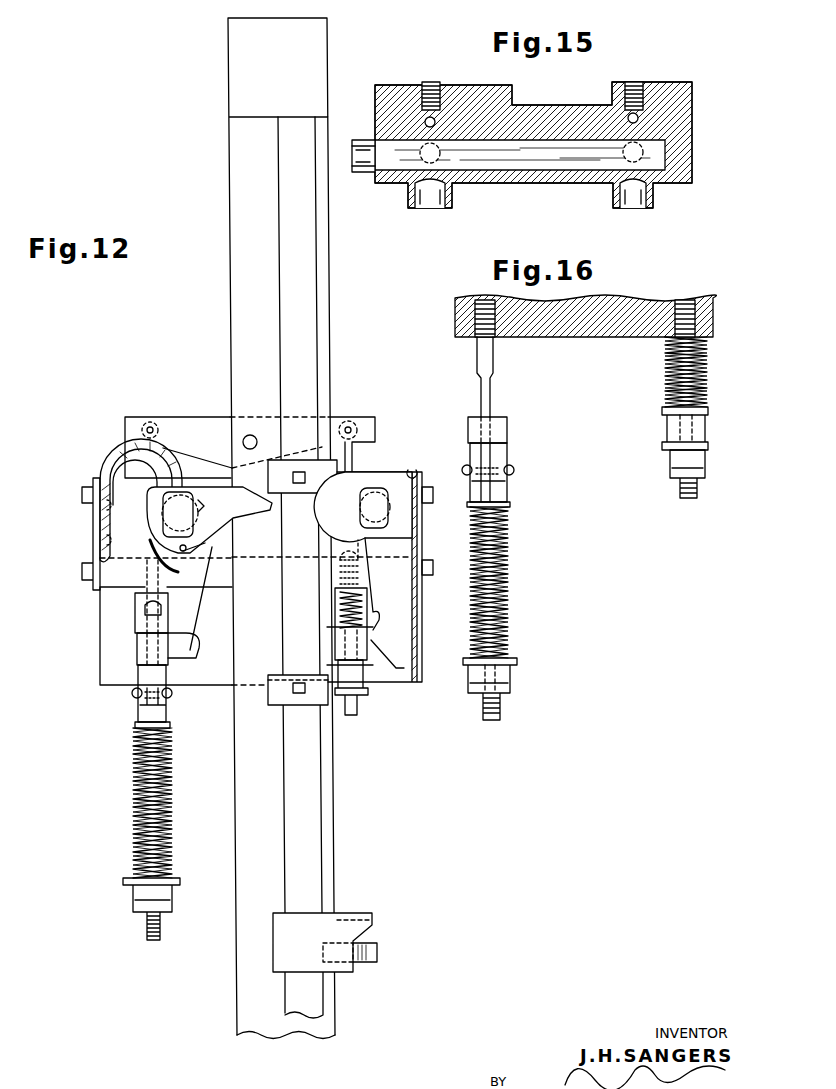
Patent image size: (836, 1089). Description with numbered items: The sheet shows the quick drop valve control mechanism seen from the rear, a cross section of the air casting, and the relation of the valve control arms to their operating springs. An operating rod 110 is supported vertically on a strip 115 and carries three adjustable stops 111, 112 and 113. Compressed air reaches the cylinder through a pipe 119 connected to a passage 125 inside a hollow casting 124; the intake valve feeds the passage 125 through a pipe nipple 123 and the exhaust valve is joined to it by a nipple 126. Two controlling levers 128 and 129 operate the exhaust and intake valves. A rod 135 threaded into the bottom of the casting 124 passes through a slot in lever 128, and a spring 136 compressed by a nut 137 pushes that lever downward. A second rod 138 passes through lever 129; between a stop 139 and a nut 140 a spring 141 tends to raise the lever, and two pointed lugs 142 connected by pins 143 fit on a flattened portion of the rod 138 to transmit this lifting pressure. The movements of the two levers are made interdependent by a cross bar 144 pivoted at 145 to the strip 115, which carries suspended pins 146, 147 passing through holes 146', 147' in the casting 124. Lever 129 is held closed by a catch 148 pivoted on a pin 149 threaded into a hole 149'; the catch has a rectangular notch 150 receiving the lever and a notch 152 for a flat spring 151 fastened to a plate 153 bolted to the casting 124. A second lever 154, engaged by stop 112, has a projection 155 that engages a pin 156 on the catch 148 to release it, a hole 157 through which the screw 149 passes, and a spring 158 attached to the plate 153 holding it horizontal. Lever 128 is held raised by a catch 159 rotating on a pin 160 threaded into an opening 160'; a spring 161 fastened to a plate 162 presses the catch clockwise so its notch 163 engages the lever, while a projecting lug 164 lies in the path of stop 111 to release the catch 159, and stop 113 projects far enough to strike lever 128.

In FIG. 12, the operating rod 110 is at (308, 308).
In FIG. 12, the stop 111 is at (284, 461).
In FIG. 12, the stop 112 is at (281, 707).
In FIG. 12, the stop 113 is at (283, 912).
In FIG. 12, the strip 115 is at (235, 313).
In FIG. 15, the pipe 119 is at (365, 175).
In FIG. 15, the pipe nipple 123 is at (412, 203).
In FIG. 15, the casting 124 is at (546, 110).
In FIG. 16, the casting 124 is at (572, 337).
In FIG. 15, the passage 125 is at (563, 155).
In FIG. 15, the nipple 126 is at (655, 196).
In FIG. 12, the controlling lever 128 is at (340, 646).
In FIG. 16, the controlling lever 128 is at (668, 430).
In FIG. 12, the controlling lever 129 is at (137, 653).
In FIG. 16, the controlling lever 129 is at (500, 431).
In FIG. 16, the rod 135 is at (665, 376).
In FIG. 16, the spring 136 is at (668, 342).
In FIG. 16, the nut 137 is at (672, 466).
In FIG. 12, the second rod 138 is at (151, 596).
In FIG. 16, the second rod 138 is at (490, 400).
In FIG. 12, the stop 139 is at (160, 738).
In FIG. 16, the stop 139 is at (505, 517).
In FIG. 12, the nut 140 is at (136, 903).
In FIG. 16, the nut 140 is at (505, 674).
In FIG. 12, the spring 141 is at (168, 811).
In FIG. 16, the spring 141 is at (508, 590).
In FIG. 12, the pointed lugs 142 is at (140, 706).
In FIG. 16, the pointed lugs 142 is at (512, 478).
In FIG. 12, the pins 143 is at (136, 694).
In FIG. 16, the pins 143 is at (511, 468).
In FIG. 12, the cross bar 144 is at (195, 418).
In FIG. 12, the pivot 145 is at (251, 426).
In FIG. 12, the suspended pin 146 is at (133, 489).
In FIG. 12, the suspended pin 147 is at (373, 442).
In FIG. 12, the catch 148 is at (208, 606).
In FIG. 12, the pin 149 is at (213, 545).
In FIG. 12, the rectangular notch 150 is at (200, 651).
In FIG. 12, the flat spring 151 is at (143, 420).
In FIG. 12, the notch 152 is at (182, 478).
In FIG. 12, the plate 153 is at (95, 527).
In FIG. 12, the second lever 154 is at (209, 520).
In FIG. 12, the projection 155 is at (180, 572).
In FIG. 12, the pin 156 is at (187, 549).
In FIG. 12, the hole 157 is at (204, 503).
In FIG. 12, the spring 158 is at (132, 462).
In FIG. 12, the catch 159 is at (412, 600).
In FIG. 12, the pin 160 is at (388, 507).
In FIG. 12, the spring 161 is at (424, 572).
In FIG. 12, the plate 162 is at (418, 540).
In FIG. 12, the notch 163 is at (377, 621).
In FIG. 12, the projecting lug 164 is at (416, 474).
In FIG. 15, the hole 146' is at (403, 93).
In FIG. 15, the hole 147' is at (684, 112).
In FIG. 15, the hole 149' is at (530, 80).
In FIG. 15, the opening 160' is at (568, 108).